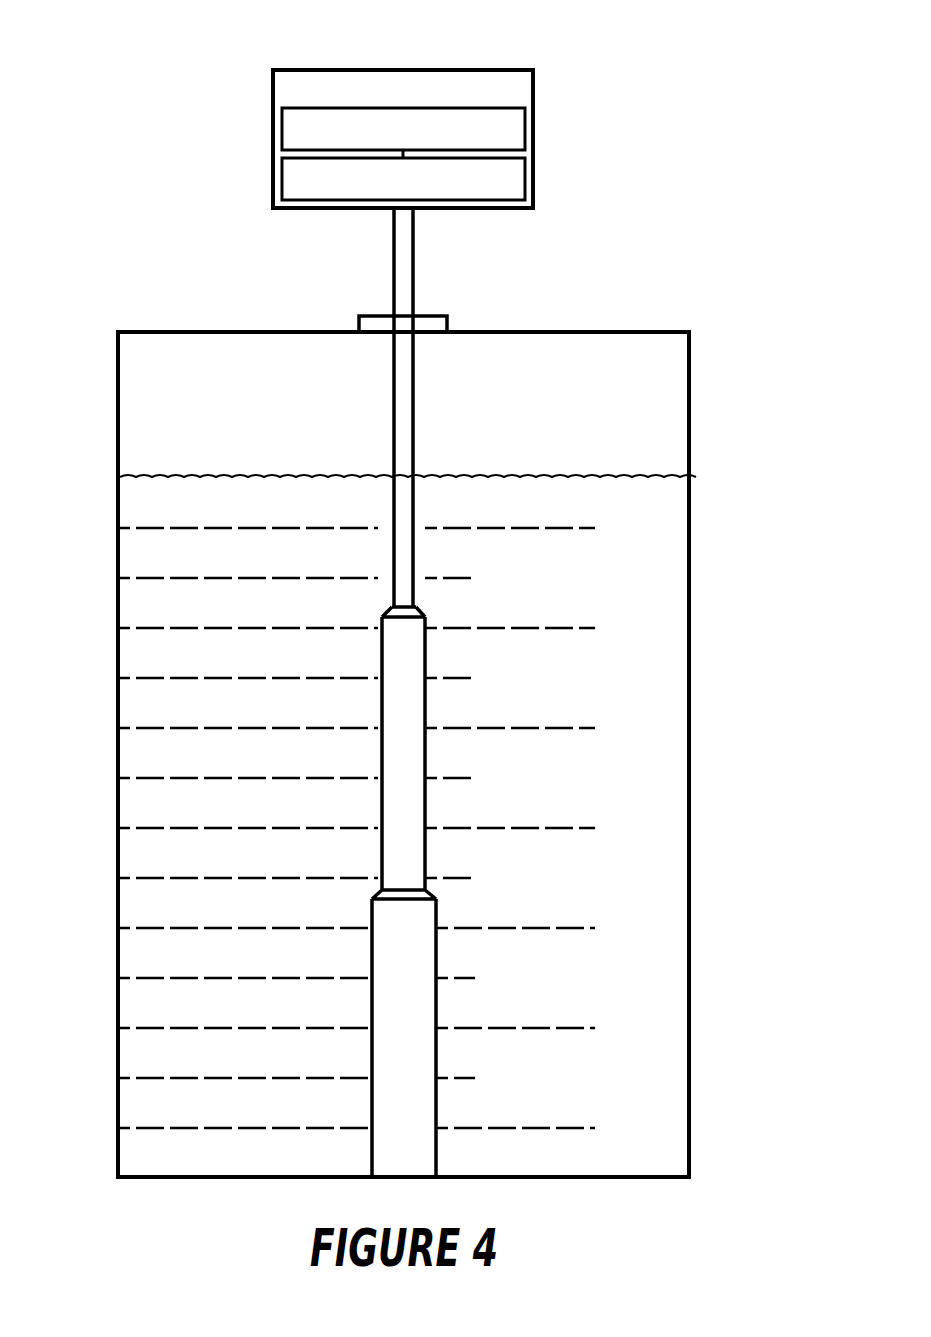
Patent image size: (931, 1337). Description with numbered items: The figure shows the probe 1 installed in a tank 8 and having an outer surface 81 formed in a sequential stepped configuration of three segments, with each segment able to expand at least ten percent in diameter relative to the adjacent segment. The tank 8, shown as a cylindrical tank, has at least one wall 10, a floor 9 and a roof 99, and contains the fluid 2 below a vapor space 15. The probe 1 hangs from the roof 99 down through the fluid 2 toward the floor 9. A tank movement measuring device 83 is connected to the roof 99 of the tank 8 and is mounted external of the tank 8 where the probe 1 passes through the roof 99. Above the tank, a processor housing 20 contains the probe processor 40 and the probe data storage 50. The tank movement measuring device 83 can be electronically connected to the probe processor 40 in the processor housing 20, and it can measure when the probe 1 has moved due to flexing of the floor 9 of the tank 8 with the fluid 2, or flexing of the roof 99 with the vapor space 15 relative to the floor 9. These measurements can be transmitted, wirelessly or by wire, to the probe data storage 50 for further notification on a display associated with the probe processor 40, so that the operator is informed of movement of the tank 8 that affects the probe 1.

The probe 1 is at (423, 592).
The processor housing 20 is at (423, 137).
The probe processor 40 is at (525, 128).
The probe data storage 50 is at (525, 176).
The tank 8 is at (421, 756).
The roof 99 is at (203, 331).
The wall 10 is at (116, 365).
The floor 9 is at (232, 1180).
The vapor space 15 is at (638, 414).
The fluid 2 is at (150, 477).
The tank movement measuring device 83 is at (447, 323).
The outer surface 81 is at (425, 708).